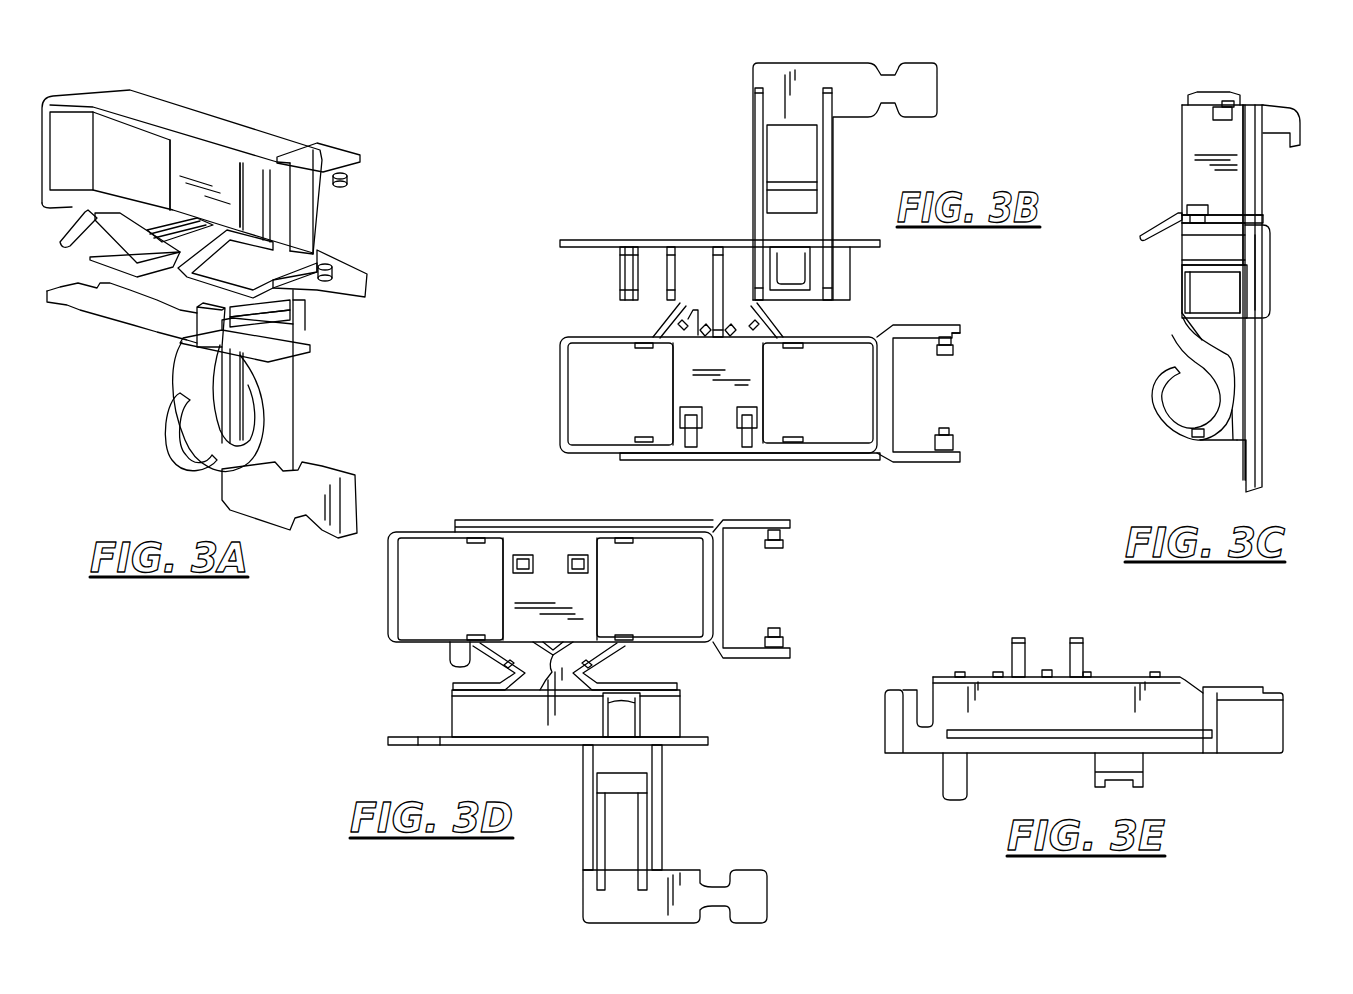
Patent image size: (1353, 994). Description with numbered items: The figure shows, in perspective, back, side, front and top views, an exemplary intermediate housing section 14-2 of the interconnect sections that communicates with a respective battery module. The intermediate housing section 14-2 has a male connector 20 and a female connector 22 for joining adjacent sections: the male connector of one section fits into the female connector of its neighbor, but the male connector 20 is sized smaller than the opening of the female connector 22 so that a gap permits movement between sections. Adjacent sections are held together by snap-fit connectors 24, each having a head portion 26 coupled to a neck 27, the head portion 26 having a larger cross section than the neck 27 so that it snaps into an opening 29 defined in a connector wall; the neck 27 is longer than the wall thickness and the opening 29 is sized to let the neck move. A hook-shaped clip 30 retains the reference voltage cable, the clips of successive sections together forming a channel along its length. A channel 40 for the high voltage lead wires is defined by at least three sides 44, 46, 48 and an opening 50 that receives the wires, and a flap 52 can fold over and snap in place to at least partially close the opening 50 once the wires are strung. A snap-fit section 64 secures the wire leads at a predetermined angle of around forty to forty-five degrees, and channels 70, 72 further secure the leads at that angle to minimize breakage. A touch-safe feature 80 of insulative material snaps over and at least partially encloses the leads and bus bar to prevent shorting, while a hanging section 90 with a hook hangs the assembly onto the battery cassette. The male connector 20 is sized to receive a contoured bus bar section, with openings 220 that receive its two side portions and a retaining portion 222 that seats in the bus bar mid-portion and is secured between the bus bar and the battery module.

In FIG. 3A, the intermediate housing section 14-2 is at (313, 97).
In FIG. 3B, the intermediate housing section 14-2 is at (647, 163).
In FIG. 3C, the intermediate housing section 14-2 is at (1105, 315).
In FIG. 3D, the intermediate housing section 14-2 is at (702, 773).
In FIG. 3E, the intermediate housing section 14-2 is at (917, 790).
In FIG. 3A, the male connector 20 is at (62, 96).
In FIG. 3B, the male connector 20 is at (570, 337).
In FIG. 3C, the male connector 20 is at (1222, 202).
In FIG. 3D, the male connector 20 is at (410, 532).
In FIG. 3E, the male connector 20 is at (895, 753).
In FIG. 3A, the female connector 22 is at (330, 150).
In FIG. 3B, the female connector 22 is at (913, 463).
In FIG. 3C, the female connector 22 is at (1185, 172).
In FIG. 3D, the female connector 22 is at (737, 518).
In FIG. 3E, the female connector 22 is at (1263, 733).
In FIG. 3A, the connector 24 is at (352, 180).
In FIG. 3B, the connector 24 is at (945, 356).
In FIG. 3C, the connector 24 is at (1205, 205).
In FIG. 3D, the connector 24 is at (775, 550).
In FIG. 3B, the head portion 26 is at (953, 345).
In FIG. 3C, the head portion 26 is at (1222, 104).
In FIG. 3D, the head portion 26 is at (783, 545).
In FIG. 3B, the neck 27 is at (960, 332).
In FIG. 3C, the neck 27 is at (1218, 107).
In FIG. 3D, the neck 27 is at (783, 535).
In FIG. 3E, the opening 29 is at (912, 690).
In FIG. 3A, the clip 30 is at (168, 410).
In FIG. 3B, the clip 30 is at (795, 147).
In FIG. 3C, the clip 30 is at (1155, 432).
In FIG. 3D, the clip 30 is at (630, 822).
In FIG. 3A, the channel 40 is at (290, 340).
In FIG. 3C, the channel 40 is at (1205, 292).
In FIG. 3D, the channel 40 is at (670, 707).
In FIG. 3A, the first side 44 is at (290, 310).
In FIG. 3C, the first side 44 is at (1250, 250).
In FIG. 3A, the second side 46 is at (293, 330).
In FIG. 3C, the second side 46 is at (1262, 276).
In FIG. 3A, the third side 48 is at (300, 368).
In FIG. 3C, the third side 48 is at (1263, 340).
In FIG. 3A, the opening 50 is at (128, 322).
In FIG. 3C, the opening 50 is at (1170, 255).
In FIG. 3A, the flap 52 is at (215, 330).
In FIG. 3C, the flap 52 is at (1180, 325).
In FIG. 3D, the flap 52 is at (617, 713).
In FIG. 3B, the snap-fit section 64 is at (757, 327).
In FIG. 3D, the snap-fit section 64 is at (545, 680).
In FIG. 3A, the channel 70 is at (135, 245).
In FIG. 3D, the channel 70 is at (500, 663).
In FIG. 3A, the channel 72 is at (205, 248).
In FIG. 3D, the channel 72 is at (603, 658).
In FIG. 3A, the touch-safe feature 80 is at (68, 232).
In FIG. 3C, the touch-safe feature 80 is at (1155, 225).
In FIG. 3D, the touch-safe feature 80 is at (462, 643).
In FIG. 3C, the hanging section 90 is at (1277, 118).
In FIG. 3A, the opening 220 is at (100, 100).
In FIG. 3B, the opening 220 is at (653, 422).
In FIG. 3D, the opening 220 is at (608, 555).
In FIG. 3A, the retaining portion 222 is at (200, 170).
In FIG. 3B, the retaining portion 222 is at (687, 360).
In FIG. 3D, the retaining portion 222 is at (583, 592).